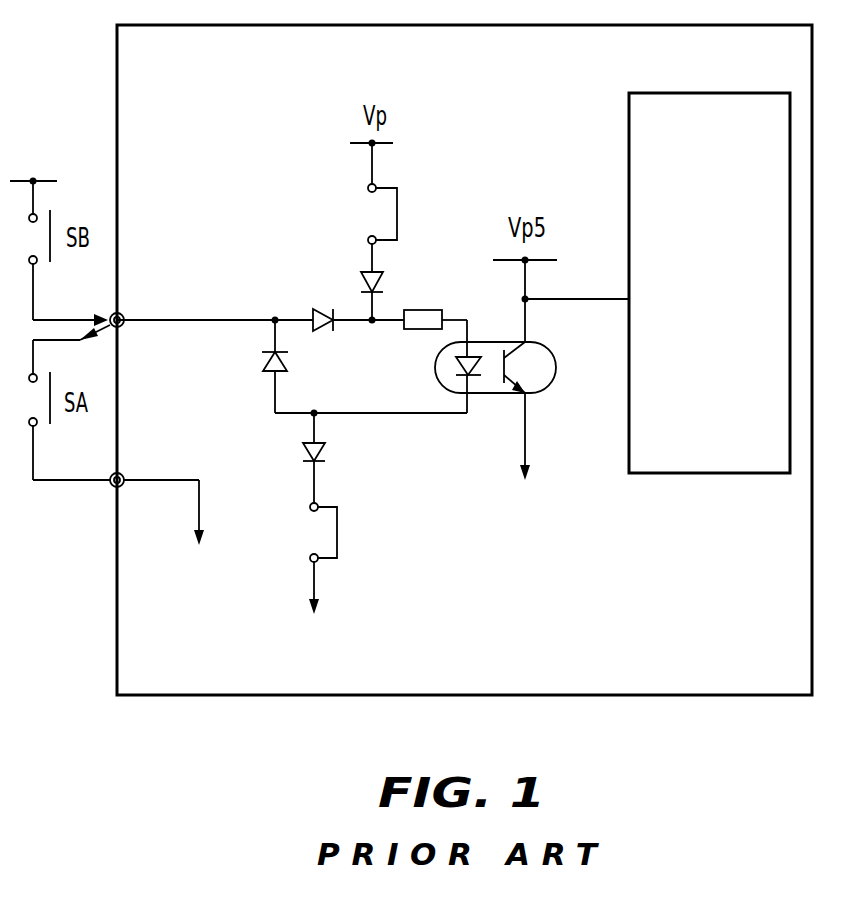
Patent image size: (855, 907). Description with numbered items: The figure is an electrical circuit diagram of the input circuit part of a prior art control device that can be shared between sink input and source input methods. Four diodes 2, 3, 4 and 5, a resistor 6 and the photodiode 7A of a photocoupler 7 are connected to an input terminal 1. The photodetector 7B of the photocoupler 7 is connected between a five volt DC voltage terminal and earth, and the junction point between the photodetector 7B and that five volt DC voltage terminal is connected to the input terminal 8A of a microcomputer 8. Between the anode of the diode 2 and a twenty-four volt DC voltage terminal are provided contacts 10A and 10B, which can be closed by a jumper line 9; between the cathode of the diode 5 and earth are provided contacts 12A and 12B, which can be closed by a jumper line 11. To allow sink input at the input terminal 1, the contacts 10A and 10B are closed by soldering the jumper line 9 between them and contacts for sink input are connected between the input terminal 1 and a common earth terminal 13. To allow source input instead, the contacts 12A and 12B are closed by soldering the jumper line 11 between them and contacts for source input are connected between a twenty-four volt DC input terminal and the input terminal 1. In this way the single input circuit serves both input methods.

The input terminal 1 is at (123, 313).
The diode 2 is at (365, 278).
The diode 3 is at (313, 317).
The diode 4 is at (263, 372).
The diode 5 is at (324, 452).
The resistor 6 is at (424, 310).
The photocoupler 7 is at (485, 341).
The photodiode 7A is at (474, 372).
The photodetector 7B is at (537, 369).
The microcomputer 8 is at (629, 182).
The input terminal of microcomputer 8A is at (628, 304).
The jumper line 9 is at (398, 213).
The contact 10A is at (366, 186).
The contact 10B is at (366, 238).
The jumper line 11 is at (340, 530).
The contact 12A is at (310, 506).
The contact 12B is at (310, 560).
The common earth terminal 13 is at (112, 487).